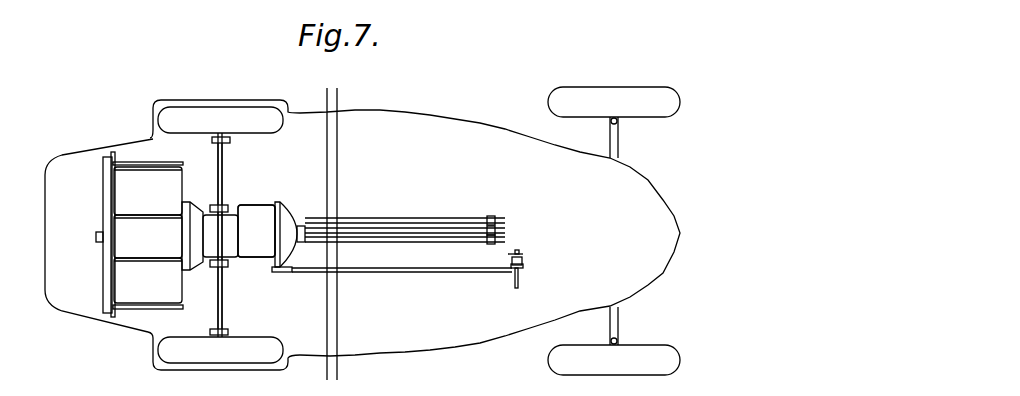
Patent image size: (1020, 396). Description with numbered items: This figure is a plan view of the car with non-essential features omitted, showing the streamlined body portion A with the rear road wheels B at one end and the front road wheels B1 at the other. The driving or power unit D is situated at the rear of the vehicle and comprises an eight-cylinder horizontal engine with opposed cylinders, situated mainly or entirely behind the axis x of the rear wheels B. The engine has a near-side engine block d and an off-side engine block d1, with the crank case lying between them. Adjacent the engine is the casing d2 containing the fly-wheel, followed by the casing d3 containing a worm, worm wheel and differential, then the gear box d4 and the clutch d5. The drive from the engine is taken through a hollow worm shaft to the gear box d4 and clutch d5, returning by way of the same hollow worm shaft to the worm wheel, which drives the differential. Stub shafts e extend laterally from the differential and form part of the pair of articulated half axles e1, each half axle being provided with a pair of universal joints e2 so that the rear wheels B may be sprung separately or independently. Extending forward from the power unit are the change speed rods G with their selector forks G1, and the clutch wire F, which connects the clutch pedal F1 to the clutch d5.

The streamlined body portion A is at (485, 128).
The rear road wheels B is at (252, 118).
The front road wheels B1 is at (627, 97).
The near-side engine block d is at (148, 191).
The off-side engine block d1 is at (148, 280).
The fly-wheel casing d2 is at (190, 202).
The worm and differential casing d3 is at (220, 236).
The gear box d4 is at (256, 231).
The driving or power unit D is at (257, 212).
The clutch d5 is at (285, 224).
The axis of the rear wheels x is at (222, 164).
The stub shafts e is at (218, 209).
The articulated half axles e1 is at (222, 190).
The universal joints e2 is at (229, 141).
The change speed rods G is at (407, 223).
The selector forks G1 is at (498, 240).
The clutch wire F is at (362, 272).
The clutch pedal F1 is at (509, 256).